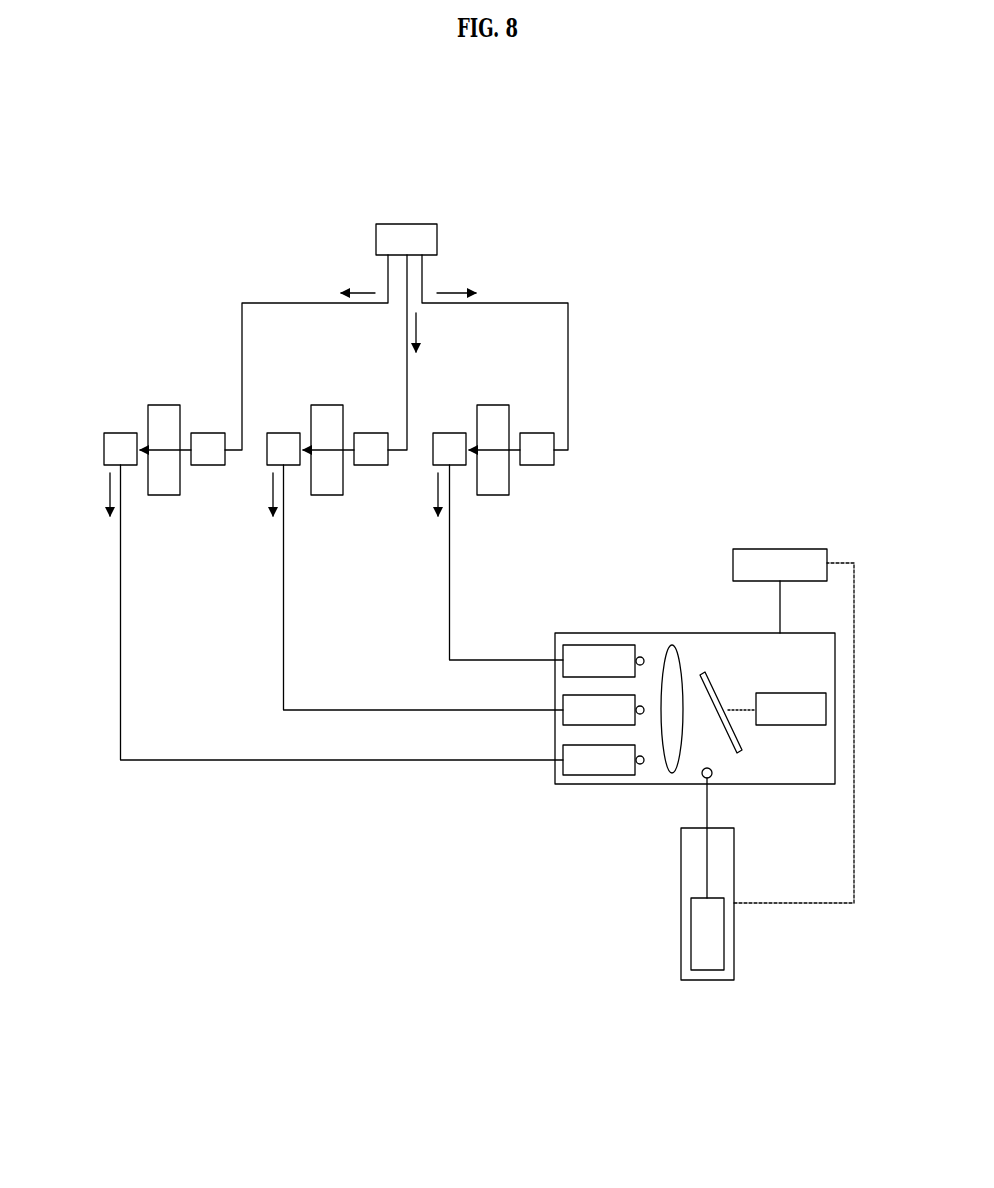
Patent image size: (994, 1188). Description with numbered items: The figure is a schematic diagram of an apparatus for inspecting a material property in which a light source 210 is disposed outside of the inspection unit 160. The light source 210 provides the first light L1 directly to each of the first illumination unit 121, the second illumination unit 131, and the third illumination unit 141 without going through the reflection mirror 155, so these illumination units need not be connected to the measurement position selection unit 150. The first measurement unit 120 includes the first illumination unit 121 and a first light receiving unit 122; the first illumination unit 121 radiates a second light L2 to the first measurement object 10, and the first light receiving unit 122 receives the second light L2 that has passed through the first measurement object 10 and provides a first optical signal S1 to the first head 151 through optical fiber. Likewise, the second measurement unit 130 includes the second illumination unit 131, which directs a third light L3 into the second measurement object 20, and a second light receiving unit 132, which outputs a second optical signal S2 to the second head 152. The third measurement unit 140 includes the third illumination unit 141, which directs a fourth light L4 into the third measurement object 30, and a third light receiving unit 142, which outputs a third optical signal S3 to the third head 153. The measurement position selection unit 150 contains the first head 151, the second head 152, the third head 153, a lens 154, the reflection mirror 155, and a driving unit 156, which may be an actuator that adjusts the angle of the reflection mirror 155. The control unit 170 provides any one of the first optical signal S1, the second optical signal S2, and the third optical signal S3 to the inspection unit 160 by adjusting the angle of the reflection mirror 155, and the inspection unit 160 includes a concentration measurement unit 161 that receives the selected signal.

The light source 210 is at (437, 224).
The first light L1 is at (408, 308).
The first measurement unit 120 is at (164, 443).
The first light receiving unit 122 is at (120, 433).
The first illumination unit 121 is at (208, 412).
The second light L2 is at (165, 455).
The first measurement object 10 is at (165, 495).
The first optical signal S1 is at (110, 496).
The second measurement unit 130 is at (327, 443).
The second light receiving unit 132 is at (283, 433).
The second illumination unit 131 is at (371, 412).
The third light L3 is at (328, 455).
The second measurement object 20 is at (328, 495).
The second optical signal S2 is at (273, 496).
The third measurement unit 140 is at (493, 443).
The third light receiving unit 142 is at (449, 433).
The third illumination unit 141 is at (535, 433).
The fourth light L4 is at (494, 455).
The third measurement object 30 is at (494, 495).
The third optical signal S3 is at (438, 496).
The measurement position selection unit 150 is at (706, 686).
The first head 151 is at (563, 750).
The second head 152 is at (563, 700).
The third head 153 is at (563, 650).
The lens 154 is at (673, 645).
The reflection mirror 155 is at (740, 752).
The driving unit 156 is at (826, 693).
The inspection unit 160 is at (738, 912).
The concentration measurement unit 161 is at (708, 970).
The control unit 170 is at (827, 549).